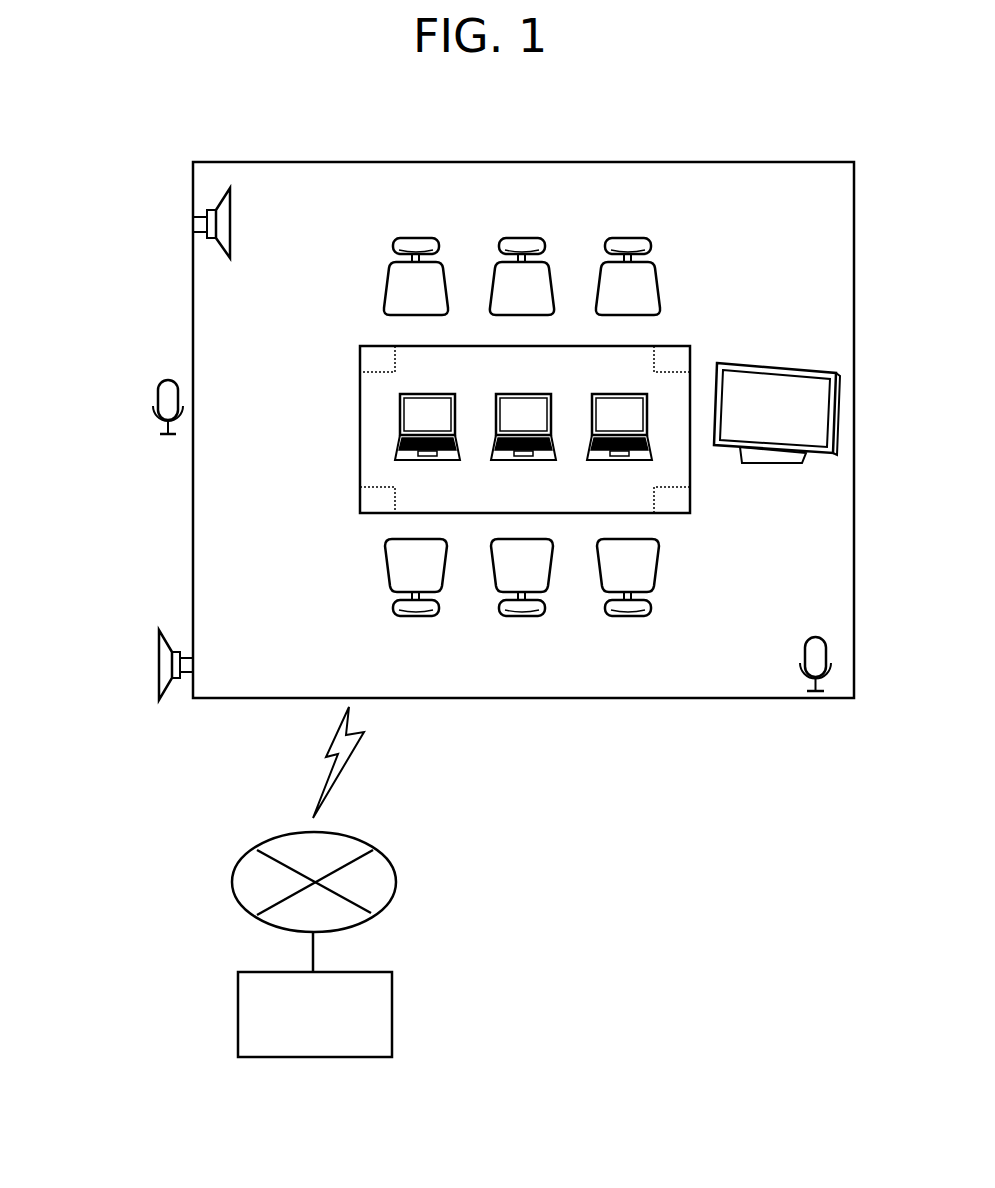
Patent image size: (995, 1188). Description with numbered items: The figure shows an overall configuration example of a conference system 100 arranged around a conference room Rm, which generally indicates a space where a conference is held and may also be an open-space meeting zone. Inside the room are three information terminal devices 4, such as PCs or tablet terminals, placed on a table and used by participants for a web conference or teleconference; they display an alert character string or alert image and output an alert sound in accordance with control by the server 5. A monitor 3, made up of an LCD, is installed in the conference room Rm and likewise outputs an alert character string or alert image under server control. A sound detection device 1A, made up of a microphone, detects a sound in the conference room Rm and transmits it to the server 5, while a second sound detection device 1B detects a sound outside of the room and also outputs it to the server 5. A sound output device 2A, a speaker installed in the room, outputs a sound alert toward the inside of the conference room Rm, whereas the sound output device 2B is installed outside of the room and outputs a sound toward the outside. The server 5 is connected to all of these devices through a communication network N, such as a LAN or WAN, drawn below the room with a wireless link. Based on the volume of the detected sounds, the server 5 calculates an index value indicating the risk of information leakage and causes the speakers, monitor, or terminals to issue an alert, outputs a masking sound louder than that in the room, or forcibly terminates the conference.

The conference system 100 is at (805, 143).
The conference room Rm is at (679, 162).
The sound detection device 1A is at (814, 636).
The sound detection device 1B is at (160, 394).
The sound output device 2A is at (231, 223).
The sound output device 2B is at (160, 672).
The monitor 3 is at (790, 365).
The information terminal device 4 is at (437, 394).
The communication network N is at (385, 851).
The server 5 is at (392, 993).